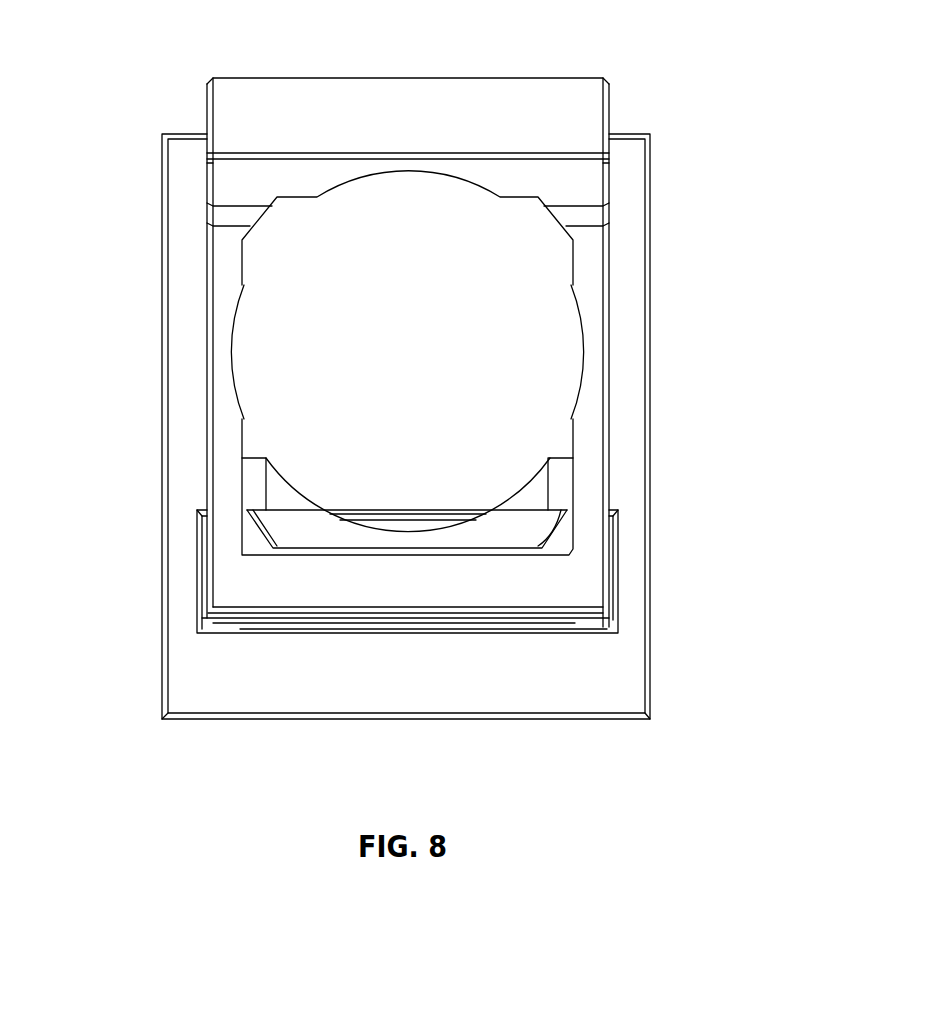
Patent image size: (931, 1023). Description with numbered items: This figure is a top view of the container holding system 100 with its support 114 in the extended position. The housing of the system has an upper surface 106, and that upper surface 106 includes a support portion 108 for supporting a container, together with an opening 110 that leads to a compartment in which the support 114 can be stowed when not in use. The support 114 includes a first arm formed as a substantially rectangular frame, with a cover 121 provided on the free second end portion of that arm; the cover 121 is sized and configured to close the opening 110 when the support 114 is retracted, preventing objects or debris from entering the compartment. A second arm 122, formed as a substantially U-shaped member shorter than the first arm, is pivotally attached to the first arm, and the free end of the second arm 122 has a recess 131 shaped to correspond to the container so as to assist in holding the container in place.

The container holding system 100 is at (260, 743).
The upper surface 106 is at (638, 403).
The support portion 108 is at (555, 328).
The opening 110 is at (615, 533).
The support 114 is at (580, 100).
The cover 121 is at (408, 100).
The second arm 122 is at (283, 528).
The recess 131 is at (283, 488).